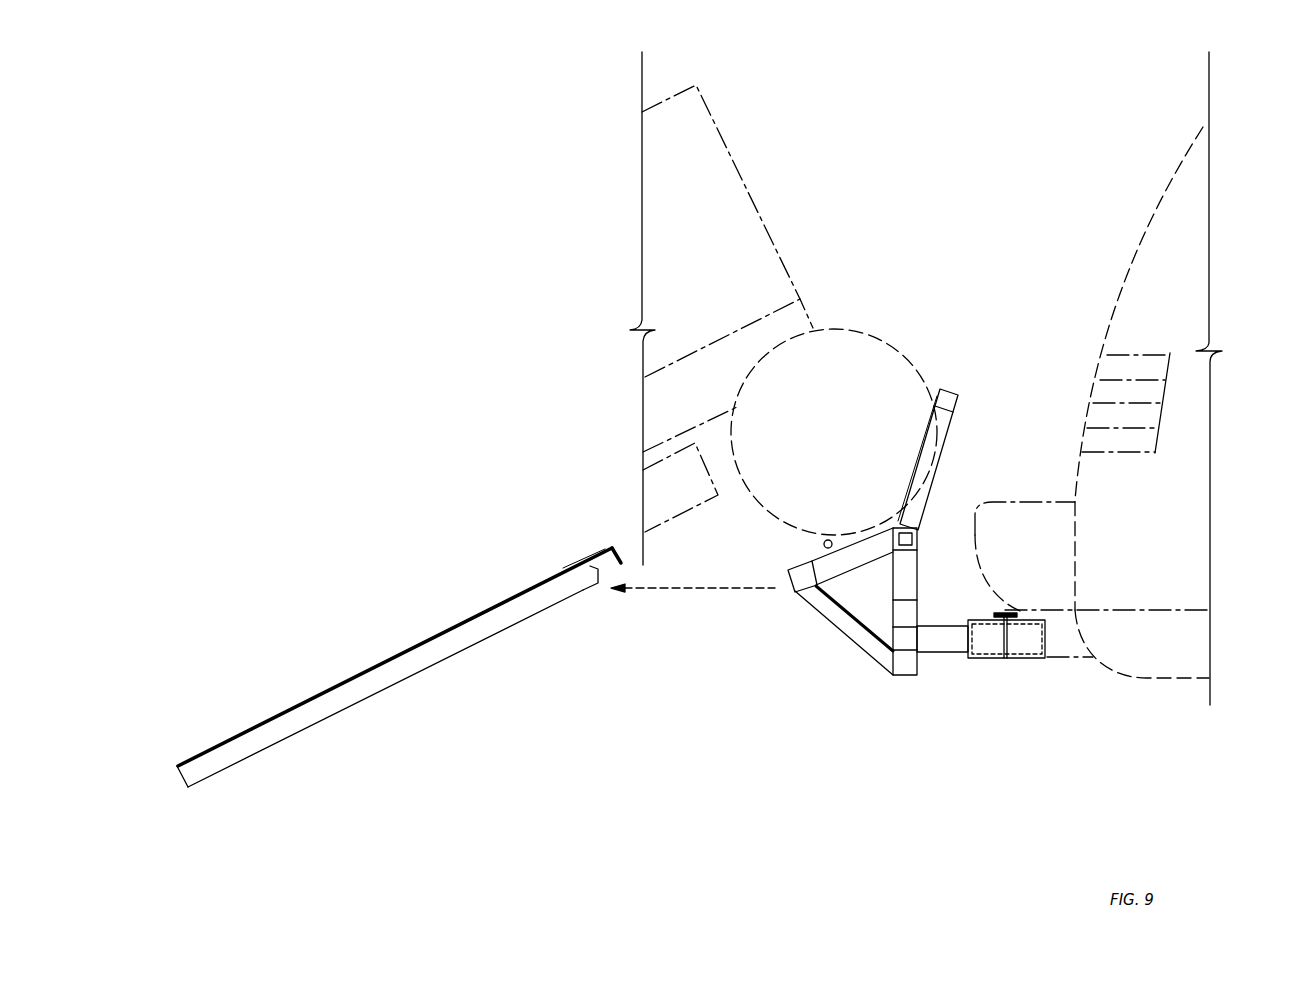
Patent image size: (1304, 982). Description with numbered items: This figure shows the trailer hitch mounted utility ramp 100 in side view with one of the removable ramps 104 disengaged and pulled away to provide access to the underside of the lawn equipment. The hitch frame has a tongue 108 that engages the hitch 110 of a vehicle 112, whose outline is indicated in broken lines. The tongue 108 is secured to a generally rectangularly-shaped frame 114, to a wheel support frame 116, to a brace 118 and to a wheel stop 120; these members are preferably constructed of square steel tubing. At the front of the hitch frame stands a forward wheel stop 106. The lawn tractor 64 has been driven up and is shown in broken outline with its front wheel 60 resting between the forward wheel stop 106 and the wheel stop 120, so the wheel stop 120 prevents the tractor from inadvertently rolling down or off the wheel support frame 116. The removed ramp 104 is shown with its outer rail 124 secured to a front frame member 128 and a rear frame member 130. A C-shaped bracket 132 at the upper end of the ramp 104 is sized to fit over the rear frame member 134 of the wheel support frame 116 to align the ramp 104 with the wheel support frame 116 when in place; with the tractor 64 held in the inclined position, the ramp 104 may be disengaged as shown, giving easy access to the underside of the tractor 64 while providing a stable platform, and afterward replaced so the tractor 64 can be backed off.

The front wheels 60 is at (893, 346).
The lawn tractor 64 is at (737, 168).
The trailer hitch mounted utility ramp 100 is at (884, 248).
The removable ramps 104 is at (399, 659).
The forward wheel stops 106 is at (940, 388).
The tongue 108 is at (932, 654).
The hitch 110 is at (1035, 659).
The vehicle 112 is at (1170, 197).
The frame 114 is at (918, 572).
The wheel support frames 116 is at (830, 626).
The braces 118 is at (843, 578).
The wheel stops 120 is at (832, 541).
The outer rail 124 is at (398, 678).
The front frame member 128 is at (582, 592).
The rear frame member 130 is at (206, 776).
The C-shaped bracket 132 is at (607, 548).
The rear frame member of wheel support frame 134 is at (788, 592).